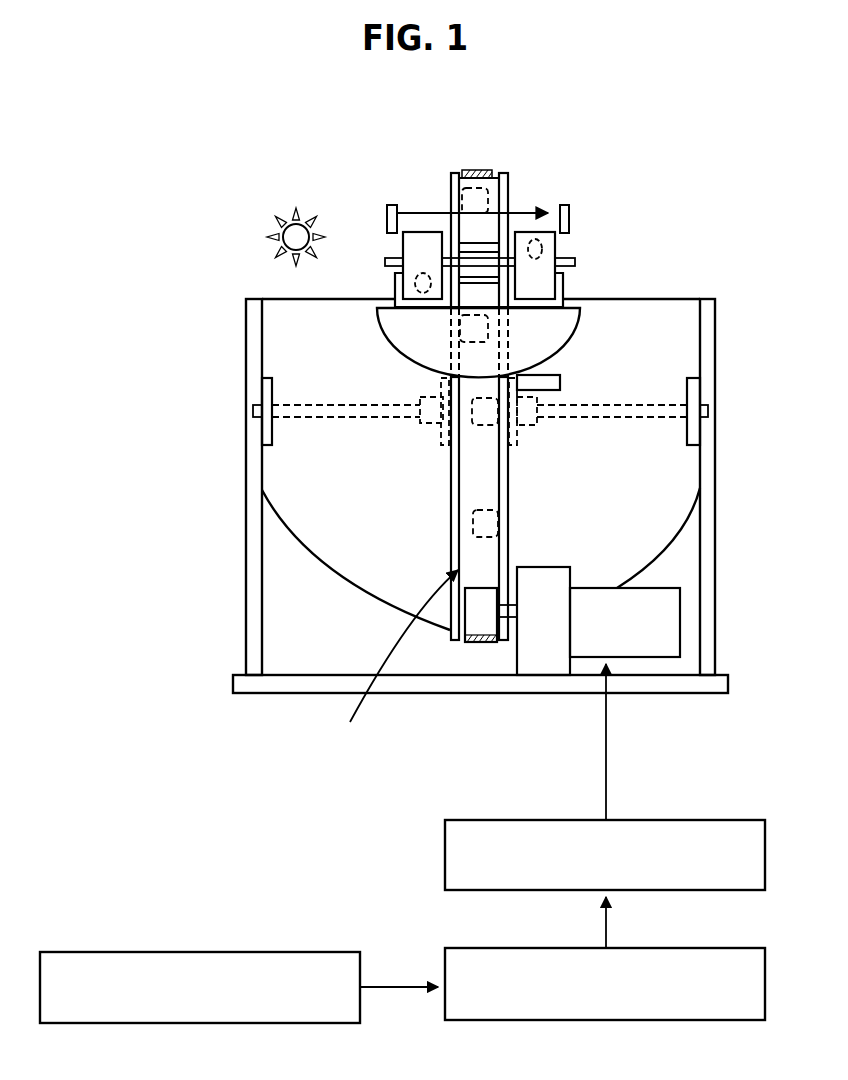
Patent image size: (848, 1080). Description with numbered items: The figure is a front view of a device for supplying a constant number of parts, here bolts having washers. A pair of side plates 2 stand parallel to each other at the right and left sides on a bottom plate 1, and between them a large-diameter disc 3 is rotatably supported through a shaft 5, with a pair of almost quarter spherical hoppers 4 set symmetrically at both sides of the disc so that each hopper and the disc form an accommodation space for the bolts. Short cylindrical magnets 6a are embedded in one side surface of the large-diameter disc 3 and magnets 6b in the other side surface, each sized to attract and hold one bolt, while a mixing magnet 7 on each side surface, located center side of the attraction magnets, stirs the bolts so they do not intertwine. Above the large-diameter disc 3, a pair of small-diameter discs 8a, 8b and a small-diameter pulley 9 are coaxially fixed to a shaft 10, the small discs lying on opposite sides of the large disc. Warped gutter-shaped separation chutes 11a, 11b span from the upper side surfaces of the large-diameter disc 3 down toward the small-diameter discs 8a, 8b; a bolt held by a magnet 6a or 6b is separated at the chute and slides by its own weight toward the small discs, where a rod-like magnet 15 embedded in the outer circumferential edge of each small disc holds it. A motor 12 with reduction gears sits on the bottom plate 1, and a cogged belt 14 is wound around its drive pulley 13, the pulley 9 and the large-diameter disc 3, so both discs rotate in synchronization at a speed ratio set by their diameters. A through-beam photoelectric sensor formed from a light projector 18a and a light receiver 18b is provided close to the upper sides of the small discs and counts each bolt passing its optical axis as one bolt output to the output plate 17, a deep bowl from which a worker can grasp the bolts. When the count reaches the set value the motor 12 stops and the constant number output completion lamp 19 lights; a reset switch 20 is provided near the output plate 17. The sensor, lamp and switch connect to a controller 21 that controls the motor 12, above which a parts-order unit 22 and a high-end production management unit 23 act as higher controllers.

The bottom plate 1 is at (295, 694).
The side plate 2 is at (246, 533).
The large-diameter disc 3 is at (395, 657).
The hopper 4 is at (287, 477).
The shaft 5 is at (600, 418).
The magnet 6a is at (473, 202).
The magnet 6b is at (485, 413).
The mixing magnet 7 is at (470, 330).
The small-diameter disc 8a is at (403, 248).
The small-diameter disc 8b is at (560, 238).
The small-diameter pulley 9 is at (483, 240).
The shaft 10 is at (578, 262).
The separation chute 11a is at (397, 273).
The separation chute 11b is at (563, 282).
The motor 12 is at (658, 643).
The drive pulley 13 is at (482, 620).
The cogged belt 14 is at (470, 643).
The rod-like magnet 15 is at (537, 240).
The output plate 17 is at (563, 327).
The light projector 18a is at (387, 207).
The light receiver 18b is at (570, 213).
The constant number output completion lamp 19 is at (272, 237).
The reset switch 20 is at (560, 377).
The controller 21 is at (745, 820).
The parts-order unit 22 is at (760, 948).
The high-end production management unit 23 is at (220, 952).